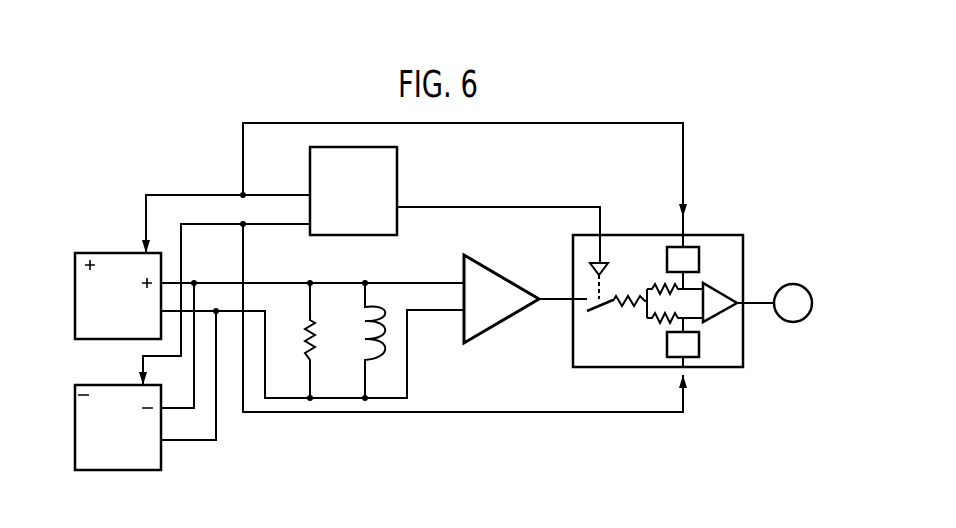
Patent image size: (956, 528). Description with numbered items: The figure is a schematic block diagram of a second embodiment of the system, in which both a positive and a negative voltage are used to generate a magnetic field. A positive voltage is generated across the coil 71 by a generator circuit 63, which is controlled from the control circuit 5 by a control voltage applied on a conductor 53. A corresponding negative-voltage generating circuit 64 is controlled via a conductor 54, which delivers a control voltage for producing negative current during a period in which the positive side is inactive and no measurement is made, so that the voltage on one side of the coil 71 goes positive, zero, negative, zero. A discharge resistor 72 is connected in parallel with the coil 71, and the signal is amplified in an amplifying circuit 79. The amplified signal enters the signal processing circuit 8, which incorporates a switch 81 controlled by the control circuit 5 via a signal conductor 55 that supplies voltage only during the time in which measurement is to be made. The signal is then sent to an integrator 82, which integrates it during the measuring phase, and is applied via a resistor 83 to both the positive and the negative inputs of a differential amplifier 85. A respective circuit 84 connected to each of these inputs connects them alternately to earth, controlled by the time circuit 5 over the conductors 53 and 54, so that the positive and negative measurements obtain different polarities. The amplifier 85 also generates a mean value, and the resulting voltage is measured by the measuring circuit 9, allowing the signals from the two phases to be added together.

The control circuit 5 is at (399, 167).
The signal processing circuit 8 is at (573, 347).
The measuring circuit 9 is at (781, 321).
The conductor 53 is at (243, 141).
The conductor 54 is at (272, 228).
The signal conductor 55 is at (515, 205).
The generator circuit 63 is at (96, 250).
The negative-voltage generating circuit 64 is at (96, 472).
The coil 71 is at (384, 334).
The discharge resistor 72 is at (302, 338).
The amplifying circuit 79 is at (510, 271).
The switch 81 is at (587, 297).
The integrator 82 is at (628, 297).
The resistor 83 is at (657, 283).
The circuit 84 is at (692, 247).
The differential amplifier 85 is at (738, 298).